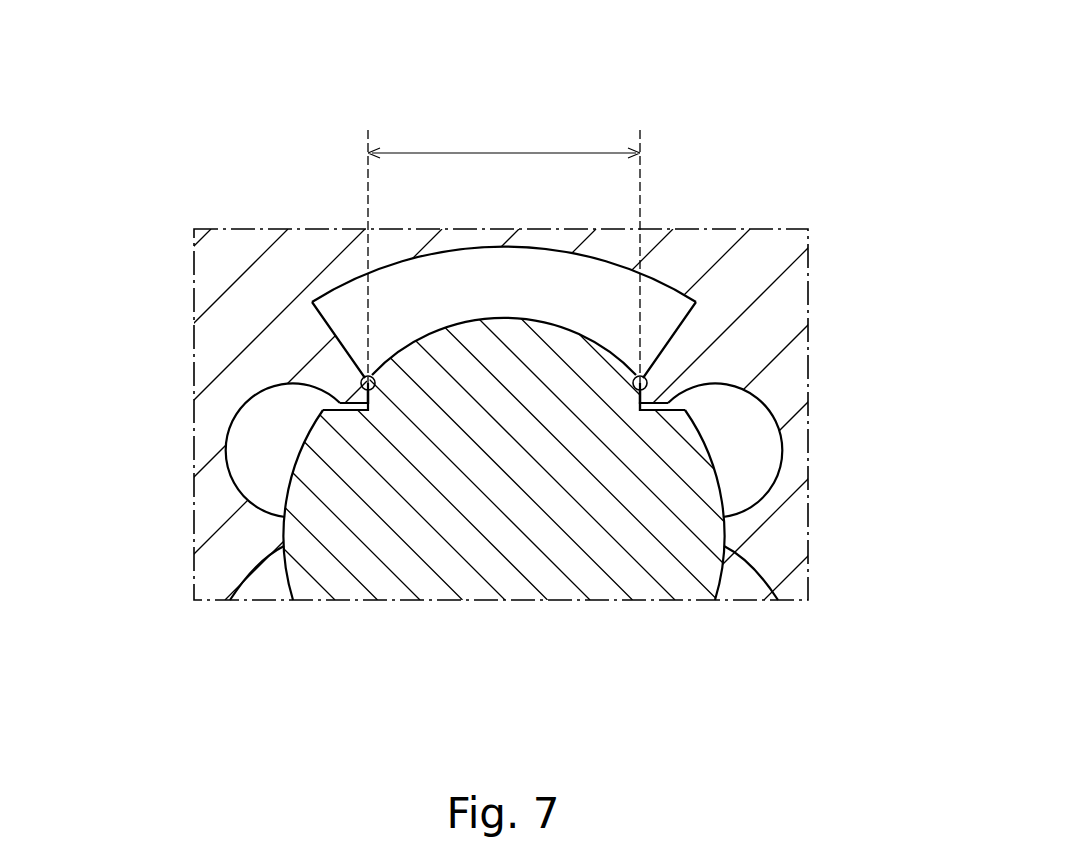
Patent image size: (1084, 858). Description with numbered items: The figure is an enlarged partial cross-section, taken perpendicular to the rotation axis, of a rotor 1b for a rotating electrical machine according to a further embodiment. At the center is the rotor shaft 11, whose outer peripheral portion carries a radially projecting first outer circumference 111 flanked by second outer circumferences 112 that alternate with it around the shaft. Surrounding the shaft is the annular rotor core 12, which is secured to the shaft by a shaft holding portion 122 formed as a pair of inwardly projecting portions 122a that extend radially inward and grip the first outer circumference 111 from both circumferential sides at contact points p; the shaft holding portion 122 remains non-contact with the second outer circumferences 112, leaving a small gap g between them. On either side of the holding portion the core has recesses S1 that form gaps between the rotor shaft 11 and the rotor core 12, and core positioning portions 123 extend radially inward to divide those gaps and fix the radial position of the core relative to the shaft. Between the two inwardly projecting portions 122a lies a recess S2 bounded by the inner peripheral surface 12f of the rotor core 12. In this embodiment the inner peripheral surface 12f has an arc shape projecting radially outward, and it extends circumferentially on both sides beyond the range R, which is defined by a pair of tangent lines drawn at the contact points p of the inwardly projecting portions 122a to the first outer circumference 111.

The rotor 1b is at (700, 190).
The rotor shaft 11 is at (449, 445).
The first outer circumference 111 is at (540, 360).
The second outer circumference 112 is at (676, 571).
The rotor core 12 is at (542, 377).
The inner peripheral surface 12f is at (440, 248).
The shaft holding portion 122 is at (501, 341).
The inwardly projecting portion 122a is at (658, 393).
The core positioning portion 123 is at (738, 533).
The recess S1 is at (764, 433).
The recess S2 is at (425, 292).
The gap g is at (700, 405).
The contact point p is at (647, 379).
The range R is at (504, 258).